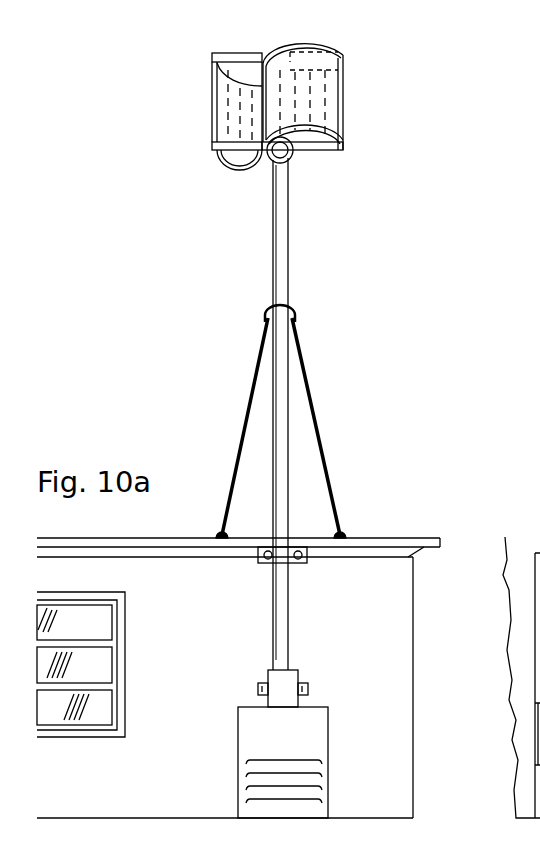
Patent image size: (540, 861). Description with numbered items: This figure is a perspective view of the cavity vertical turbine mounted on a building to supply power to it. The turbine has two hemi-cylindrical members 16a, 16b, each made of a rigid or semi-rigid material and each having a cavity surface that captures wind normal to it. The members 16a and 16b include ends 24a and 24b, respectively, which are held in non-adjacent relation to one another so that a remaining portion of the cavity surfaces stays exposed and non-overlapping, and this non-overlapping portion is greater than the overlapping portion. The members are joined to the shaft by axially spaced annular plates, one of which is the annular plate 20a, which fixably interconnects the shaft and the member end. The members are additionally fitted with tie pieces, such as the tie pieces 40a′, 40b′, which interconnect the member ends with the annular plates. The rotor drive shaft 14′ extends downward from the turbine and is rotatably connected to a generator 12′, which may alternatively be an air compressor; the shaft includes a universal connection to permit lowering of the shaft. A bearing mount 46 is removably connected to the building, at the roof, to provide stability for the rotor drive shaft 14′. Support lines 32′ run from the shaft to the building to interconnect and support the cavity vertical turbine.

The end 24b is at (210, 78).
The hemi-cylindrical member 16b is at (227, 124).
The tie piece 40b′ is at (226, 162).
The hemi-cylindrical member 16a is at (347, 87).
The end 24a is at (345, 118).
The tie piece 40a′ is at (335, 152).
The annular plate 20a is at (300, 160).
The rotor drive shaft 14′ is at (288, 292).
The support lines 32′ is at (315, 412).
The bearing mount 46 is at (295, 545).
The generator 12′ is at (292, 734).